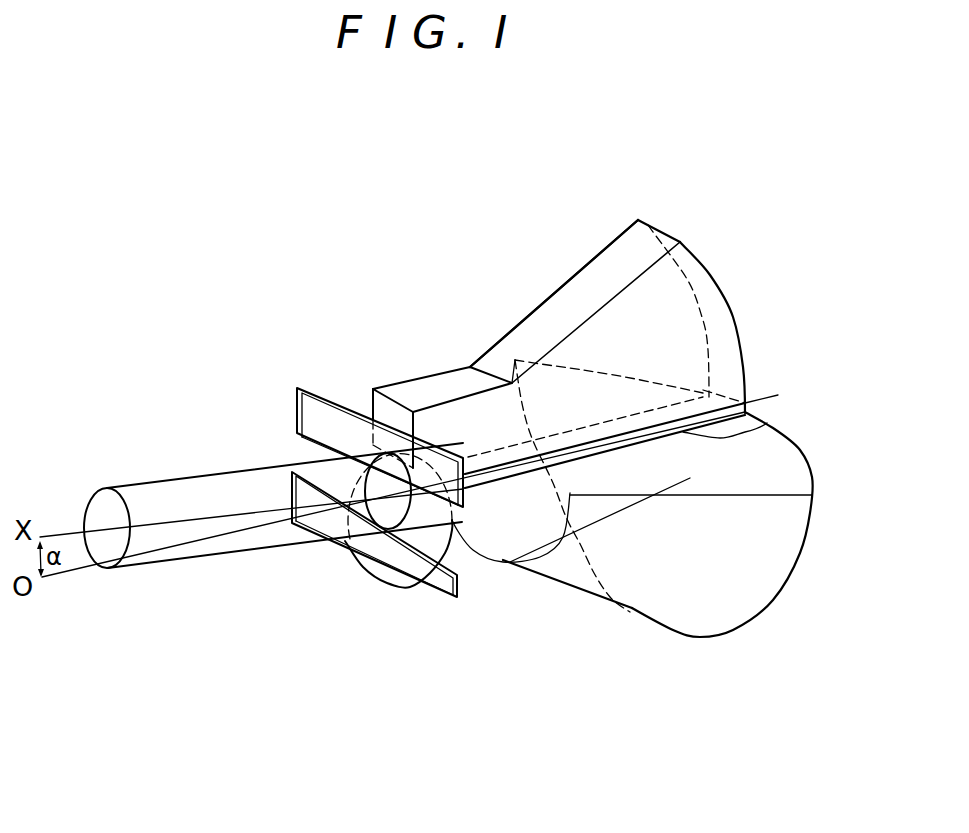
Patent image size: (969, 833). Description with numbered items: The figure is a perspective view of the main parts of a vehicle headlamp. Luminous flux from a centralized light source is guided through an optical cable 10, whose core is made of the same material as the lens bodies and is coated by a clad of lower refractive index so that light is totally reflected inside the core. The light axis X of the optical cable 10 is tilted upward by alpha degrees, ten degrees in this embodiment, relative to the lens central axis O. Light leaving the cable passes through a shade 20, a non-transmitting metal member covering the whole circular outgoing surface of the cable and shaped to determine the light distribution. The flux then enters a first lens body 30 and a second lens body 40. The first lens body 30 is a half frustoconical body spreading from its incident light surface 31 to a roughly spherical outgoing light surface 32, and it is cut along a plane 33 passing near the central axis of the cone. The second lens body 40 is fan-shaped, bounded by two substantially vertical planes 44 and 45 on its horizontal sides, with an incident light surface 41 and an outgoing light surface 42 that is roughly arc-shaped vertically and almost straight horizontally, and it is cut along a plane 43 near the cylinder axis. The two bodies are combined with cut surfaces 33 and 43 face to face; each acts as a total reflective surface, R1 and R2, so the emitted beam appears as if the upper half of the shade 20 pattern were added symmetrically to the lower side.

The optical cable 10 is at (262, 540).
The shade 20 is at (292, 508).
The first lens body 30 is at (510, 562).
The incident light surface 31 is at (430, 533).
The outgoing light surface 32 is at (802, 553).
The cut surface 33 is at (690, 478).
The second lens body 40 is at (446, 384).
The incident light surface 41 is at (372, 402).
The outgoing light surface 42 is at (727, 292).
The cut surface 43 is at (767, 423).
The vertical plane 44 is at (546, 338).
The vertical plane 45 is at (683, 355).